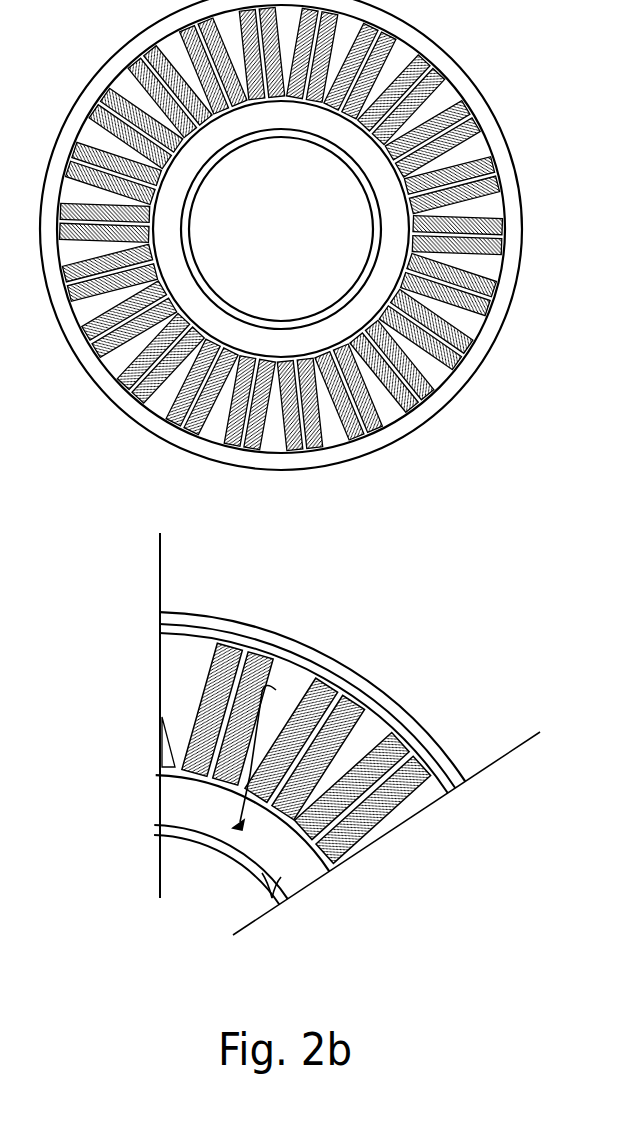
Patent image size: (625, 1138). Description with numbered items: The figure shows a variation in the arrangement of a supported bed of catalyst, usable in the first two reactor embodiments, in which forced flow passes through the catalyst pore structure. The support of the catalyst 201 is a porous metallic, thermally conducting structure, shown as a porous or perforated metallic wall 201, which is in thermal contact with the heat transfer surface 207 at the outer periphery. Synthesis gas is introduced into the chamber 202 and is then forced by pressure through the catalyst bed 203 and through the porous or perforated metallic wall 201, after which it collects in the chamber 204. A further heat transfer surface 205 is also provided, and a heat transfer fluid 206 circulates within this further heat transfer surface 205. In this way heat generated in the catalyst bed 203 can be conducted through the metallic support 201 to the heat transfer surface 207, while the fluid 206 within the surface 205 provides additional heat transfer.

The support of the catalyst 201 is at (372, 716).
The chamber 202 is at (372, 715).
The catalyst bed 203 is at (415, 790).
The chamber 204 is at (298, 870).
The further heat transfer surface 205 is at (264, 872).
The heat transfer fluid 206 is at (247, 918).
The heat transfer surface 207 is at (437, 727).